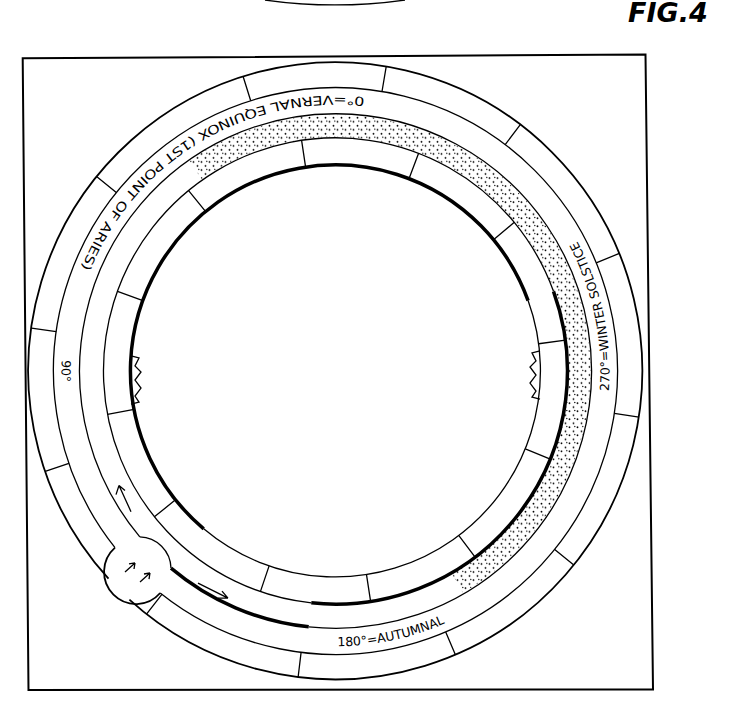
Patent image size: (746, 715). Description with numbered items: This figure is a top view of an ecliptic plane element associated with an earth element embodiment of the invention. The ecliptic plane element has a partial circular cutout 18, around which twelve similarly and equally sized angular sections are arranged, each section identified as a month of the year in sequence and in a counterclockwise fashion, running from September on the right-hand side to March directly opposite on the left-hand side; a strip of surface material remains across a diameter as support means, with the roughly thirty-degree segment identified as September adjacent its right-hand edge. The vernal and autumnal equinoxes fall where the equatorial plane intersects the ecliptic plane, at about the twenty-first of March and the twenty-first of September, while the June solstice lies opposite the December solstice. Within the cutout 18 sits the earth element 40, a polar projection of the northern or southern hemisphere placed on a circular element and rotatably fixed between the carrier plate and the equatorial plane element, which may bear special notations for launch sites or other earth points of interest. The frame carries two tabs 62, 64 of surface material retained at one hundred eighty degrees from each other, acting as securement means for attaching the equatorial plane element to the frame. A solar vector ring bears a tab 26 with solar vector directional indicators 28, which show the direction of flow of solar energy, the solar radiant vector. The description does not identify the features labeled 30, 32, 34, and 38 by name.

The partial circular cutout 18 is at (485, 222).
The tab 26 is at (112, 580).
The solar vector directional indicators 28 is at (140, 585).
The dusk terminator marking 30 is at (468, 578).
The dawn terminator marking 32 is at (193, 198).
The stippled night band 34 is at (396, 359).
The zodiac ring 38 is at (628, 431).
The earth element 40 is at (518, 255).
The tab 62 is at (528, 378).
The tab 64 is at (142, 378).